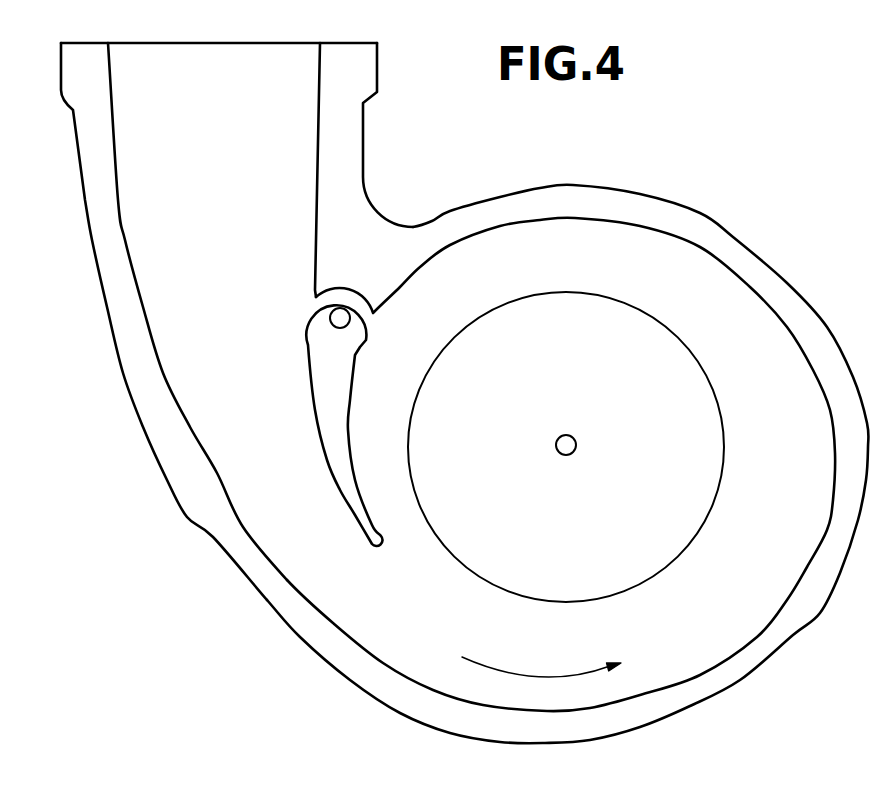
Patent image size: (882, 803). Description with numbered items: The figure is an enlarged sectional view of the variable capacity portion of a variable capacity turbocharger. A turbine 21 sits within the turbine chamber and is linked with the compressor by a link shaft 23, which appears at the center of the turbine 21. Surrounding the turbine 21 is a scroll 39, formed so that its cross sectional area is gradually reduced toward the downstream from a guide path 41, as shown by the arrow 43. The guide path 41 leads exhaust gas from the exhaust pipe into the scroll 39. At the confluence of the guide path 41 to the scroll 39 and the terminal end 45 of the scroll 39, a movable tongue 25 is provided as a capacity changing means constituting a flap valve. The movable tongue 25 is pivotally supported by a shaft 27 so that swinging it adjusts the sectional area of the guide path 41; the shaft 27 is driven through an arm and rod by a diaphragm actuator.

The turbine 21 is at (566, 447).
The link shaft 23 is at (576, 441).
The movable tongue 25 is at (340, 440).
The shaft 27 is at (350, 318).
The scroll 39 is at (750, 608).
The guide path 41 is at (252, 530).
The arrow 43 is at (541, 658).
The terminal end of the scroll 45 is at (410, 503).